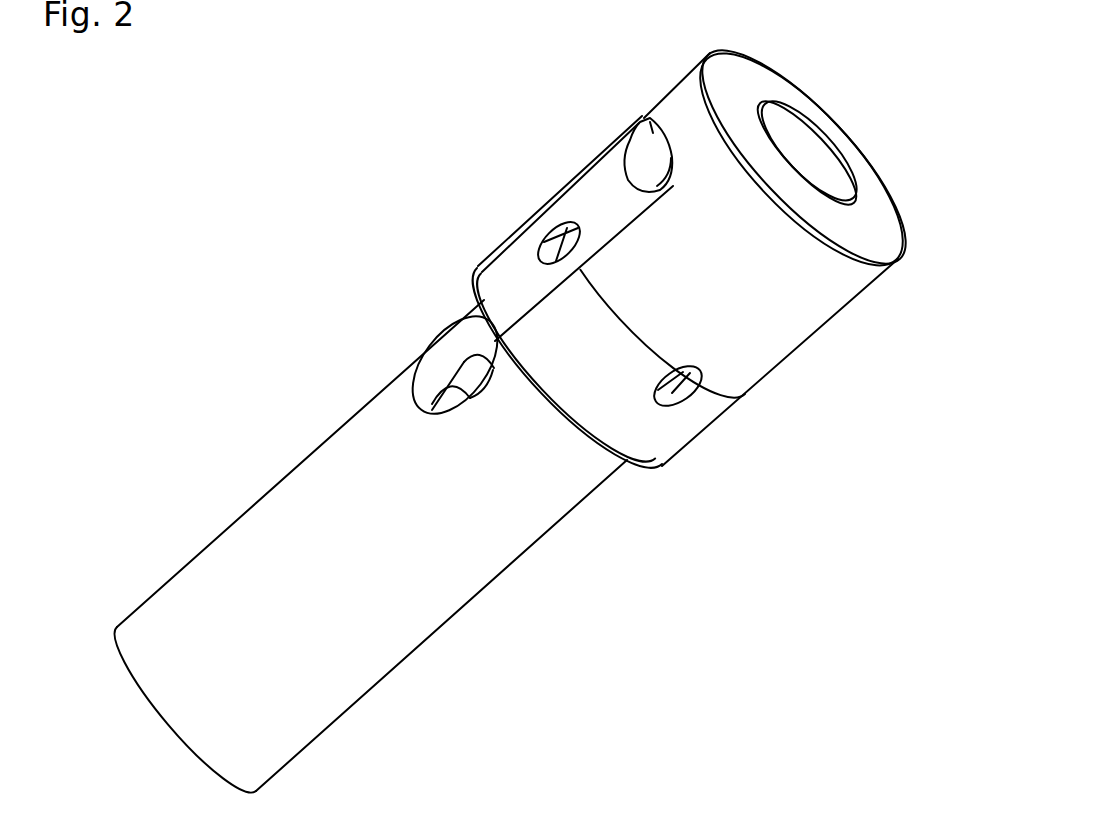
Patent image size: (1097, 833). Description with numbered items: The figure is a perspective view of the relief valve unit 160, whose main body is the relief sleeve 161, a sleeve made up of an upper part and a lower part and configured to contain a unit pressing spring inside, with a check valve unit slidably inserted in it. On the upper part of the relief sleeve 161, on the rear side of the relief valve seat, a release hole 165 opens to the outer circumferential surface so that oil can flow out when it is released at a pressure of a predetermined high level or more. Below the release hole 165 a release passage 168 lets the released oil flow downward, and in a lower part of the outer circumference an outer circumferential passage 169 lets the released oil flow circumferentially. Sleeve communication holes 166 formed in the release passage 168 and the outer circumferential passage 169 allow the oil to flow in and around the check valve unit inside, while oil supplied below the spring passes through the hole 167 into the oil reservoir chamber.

The relief valve unit 160 is at (267, 147).
The relief sleeve 161 is at (793, 310).
The release hole 165 is at (645, 158).
The sleeve communication holes 166 is at (557, 242).
The hole 167 is at (447, 367).
The release passage 168 is at (595, 203).
The outer circumferential passage 169 is at (673, 432).